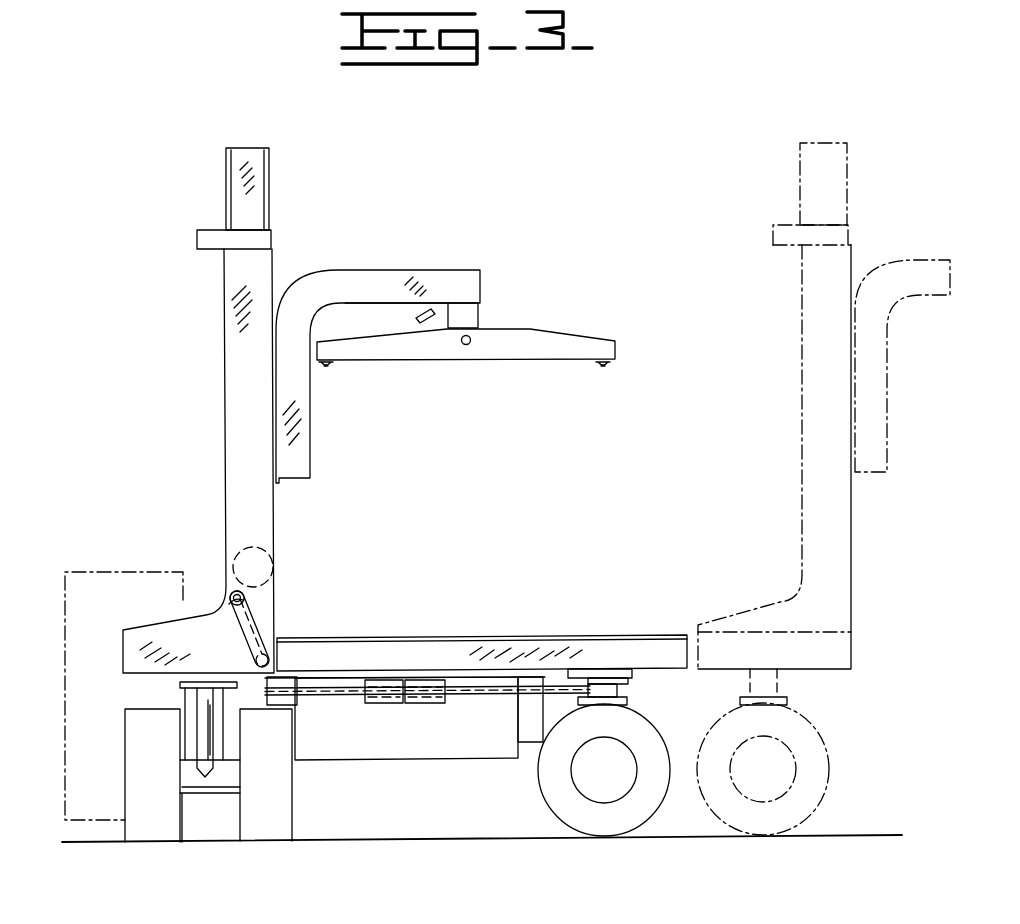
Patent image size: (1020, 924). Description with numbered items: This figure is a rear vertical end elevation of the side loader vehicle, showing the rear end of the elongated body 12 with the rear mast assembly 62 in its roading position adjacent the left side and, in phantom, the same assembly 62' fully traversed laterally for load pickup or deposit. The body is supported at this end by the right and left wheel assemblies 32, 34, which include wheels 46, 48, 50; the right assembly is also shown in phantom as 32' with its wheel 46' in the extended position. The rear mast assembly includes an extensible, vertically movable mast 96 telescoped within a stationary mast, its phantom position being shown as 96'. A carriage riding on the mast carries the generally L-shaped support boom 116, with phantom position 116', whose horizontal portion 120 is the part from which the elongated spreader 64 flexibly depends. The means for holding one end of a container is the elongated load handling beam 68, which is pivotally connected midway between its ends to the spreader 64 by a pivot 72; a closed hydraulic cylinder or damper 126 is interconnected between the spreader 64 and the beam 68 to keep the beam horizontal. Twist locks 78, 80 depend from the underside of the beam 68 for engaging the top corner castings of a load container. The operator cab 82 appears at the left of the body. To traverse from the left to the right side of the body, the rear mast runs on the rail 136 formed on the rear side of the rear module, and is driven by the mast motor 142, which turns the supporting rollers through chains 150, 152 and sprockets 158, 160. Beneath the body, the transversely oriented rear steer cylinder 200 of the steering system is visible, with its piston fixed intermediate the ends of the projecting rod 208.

The body 12 is at (466, 746).
The right wheel assembly 32 is at (595, 775).
The right wheel assembly (phantom position) 32' is at (763, 777).
The left wheel assembly 34 is at (175, 843).
The wheel 46 is at (613, 809).
The wheel (phantom position) 46' is at (780, 809).
The wheel 48 is at (267, 838).
The wheel 50 is at (148, 840).
The rear mast assembly 62 is at (198, 451).
The rear mast assembly (phantom position) 62' is at (774, 447).
The spreader 64 is at (478, 320).
The load handling beam 68 is at (522, 364).
The pivot 72 is at (466, 345).
The twist lock 78 is at (604, 366).
The twist lock 80 is at (327, 366).
The operator cab 82 is at (90, 567).
The extensible mast 96 is at (271, 189).
The extensible mast (phantom position) 96' is at (855, 182).
The support boom 116 is at (376, 360).
The support boom (phantom position) 116' is at (902, 348).
The horizontal portion 120 is at (455, 270).
The closed hydraulic cylinder or damper 126 is at (417, 313).
The rail 136 is at (346, 645).
The mast motor 142 is at (240, 550).
The chain 150 is at (263, 626).
The chain 152 is at (246, 592).
The sprocket 158 is at (255, 660).
The sprocket 160 is at (232, 610).
The steer cylinder 200 is at (388, 705).
The rod 208 is at (493, 690).